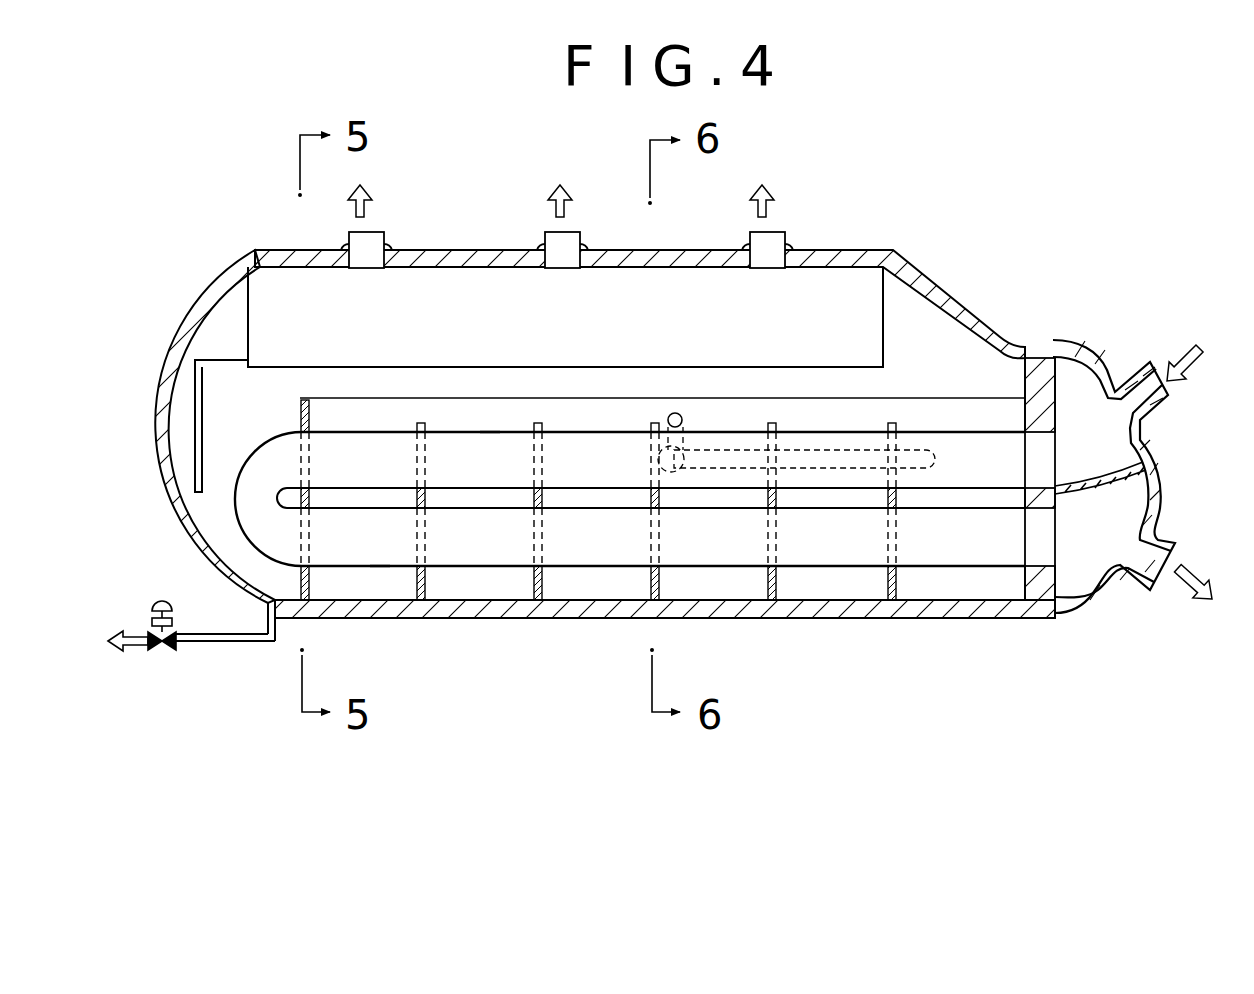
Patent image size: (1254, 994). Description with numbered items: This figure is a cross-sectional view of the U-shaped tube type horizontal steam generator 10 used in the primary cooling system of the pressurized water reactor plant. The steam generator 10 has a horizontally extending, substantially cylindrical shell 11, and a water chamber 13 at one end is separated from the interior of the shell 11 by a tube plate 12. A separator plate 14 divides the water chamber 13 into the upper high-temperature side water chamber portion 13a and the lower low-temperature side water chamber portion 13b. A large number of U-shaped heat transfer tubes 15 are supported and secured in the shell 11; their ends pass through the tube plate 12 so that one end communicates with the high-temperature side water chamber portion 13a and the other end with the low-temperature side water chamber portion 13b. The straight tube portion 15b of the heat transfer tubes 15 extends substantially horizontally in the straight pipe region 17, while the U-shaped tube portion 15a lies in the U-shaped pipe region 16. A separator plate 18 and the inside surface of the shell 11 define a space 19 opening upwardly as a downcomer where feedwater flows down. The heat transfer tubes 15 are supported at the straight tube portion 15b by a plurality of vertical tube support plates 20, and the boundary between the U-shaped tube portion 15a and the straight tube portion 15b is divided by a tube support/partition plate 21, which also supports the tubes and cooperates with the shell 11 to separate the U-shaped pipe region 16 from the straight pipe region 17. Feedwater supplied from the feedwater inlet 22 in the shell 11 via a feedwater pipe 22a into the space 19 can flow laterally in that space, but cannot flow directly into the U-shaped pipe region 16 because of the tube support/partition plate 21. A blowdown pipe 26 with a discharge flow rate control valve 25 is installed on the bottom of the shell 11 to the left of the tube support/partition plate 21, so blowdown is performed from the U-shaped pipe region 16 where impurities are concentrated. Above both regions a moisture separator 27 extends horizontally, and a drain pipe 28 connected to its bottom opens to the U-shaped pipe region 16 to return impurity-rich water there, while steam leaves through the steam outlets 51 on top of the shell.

The horizontal steam generator 10 is at (928, 262).
The shell 11 is at (460, 620).
The tube plate 12 is at (1036, 378).
The water chamber 13 is at (1115, 342).
The upper high-temperature side water chamber portion 13a is at (1118, 398).
The lower low-temperature side water chamber portion 13b is at (1107, 546).
The separator plate 14 is at (1112, 470).
The heat transfer tubes 15 is at (868, 510).
The U-shaped tube portion 15a is at (276, 497).
The straight tube portion 15b is at (493, 487).
The U-shaped pipe region 16 is at (252, 445).
The straight pipe region 17 is at (440, 428).
The separator plate 18 is at (605, 397).
The space 19 is at (380, 592).
The vertical tube support plates 20 is at (534, 570).
The tube support/partition plate 21 is at (309, 578).
The feedwater inlet 22 is at (683, 413).
The feedwater pipe 22a is at (848, 458).
The discharge flow rate control valve 25 is at (150, 621).
The blowdown pipe 26 is at (222, 643).
The moisture separator 27 is at (283, 298).
The drain pipe 28 is at (194, 471).
The steam outlets 51 is at (347, 242).